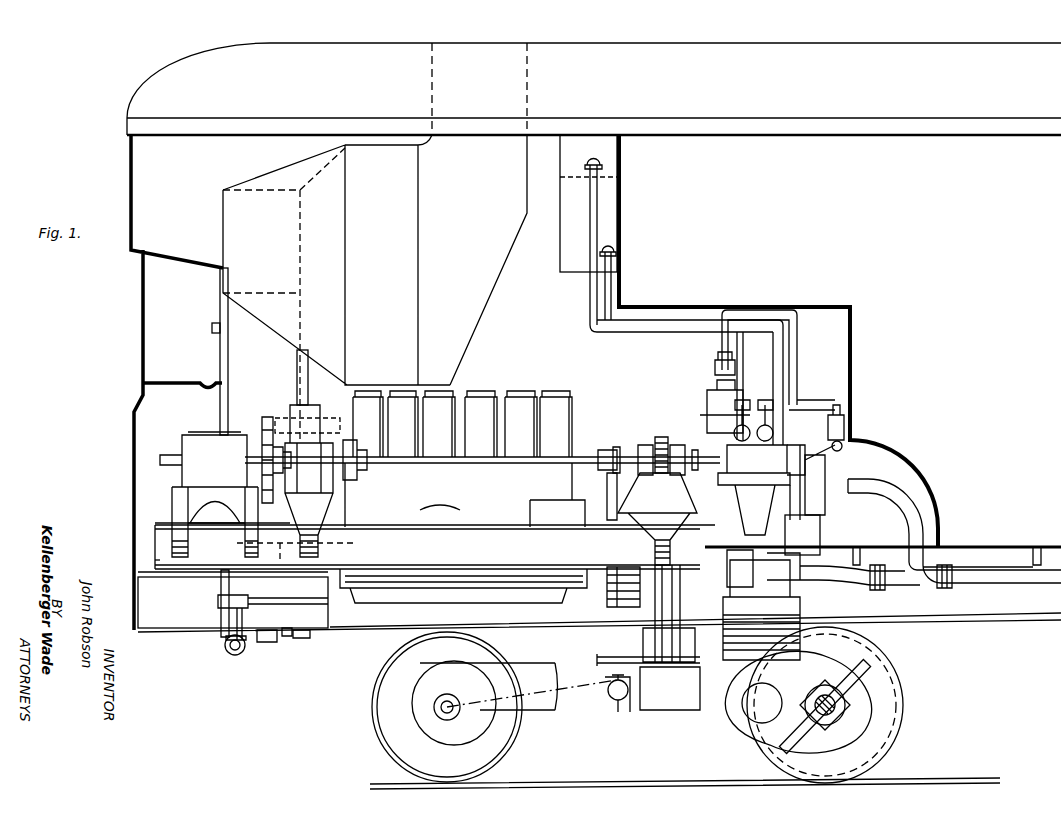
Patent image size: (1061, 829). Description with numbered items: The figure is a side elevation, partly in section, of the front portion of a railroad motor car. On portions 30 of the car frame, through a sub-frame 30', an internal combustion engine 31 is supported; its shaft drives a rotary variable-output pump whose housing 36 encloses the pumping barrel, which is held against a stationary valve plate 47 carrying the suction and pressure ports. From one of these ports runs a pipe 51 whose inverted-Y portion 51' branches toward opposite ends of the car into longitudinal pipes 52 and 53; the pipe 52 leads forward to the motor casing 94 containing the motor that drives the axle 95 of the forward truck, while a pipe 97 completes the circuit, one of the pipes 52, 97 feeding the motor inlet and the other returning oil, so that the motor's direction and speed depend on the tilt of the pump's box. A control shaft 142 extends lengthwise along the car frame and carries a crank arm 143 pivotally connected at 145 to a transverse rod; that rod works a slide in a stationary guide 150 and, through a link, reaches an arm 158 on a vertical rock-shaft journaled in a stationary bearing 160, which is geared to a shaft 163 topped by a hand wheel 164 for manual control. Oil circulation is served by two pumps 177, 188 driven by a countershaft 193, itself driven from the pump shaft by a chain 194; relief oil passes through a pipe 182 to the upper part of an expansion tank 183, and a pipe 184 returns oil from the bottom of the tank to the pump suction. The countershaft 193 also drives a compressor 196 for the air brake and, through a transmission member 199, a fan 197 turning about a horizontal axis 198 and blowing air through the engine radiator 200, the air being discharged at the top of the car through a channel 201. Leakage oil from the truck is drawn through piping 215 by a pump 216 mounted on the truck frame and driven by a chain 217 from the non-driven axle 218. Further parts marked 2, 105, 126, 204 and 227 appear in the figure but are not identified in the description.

The frame rail 2 is at (996, 621).
The car frame portions 30 is at (233, 600).
The sub-frame 30' is at (435, 547).
The internal combustion engine 31 is at (465, 459).
The pump housing 36 is at (800, 485).
The valve plate 47 is at (827, 486).
The pipe 51 is at (894, 512).
The inverted Y portion 51' is at (918, 585).
The longitudinal pipe 52 is at (858, 582).
The longitudinal pipe 53 is at (1028, 583).
The motor casing 94 is at (715, 745).
The forward truck axle 95 is at (835, 712).
The pipe 97 is at (849, 552).
The pipe 105 is at (710, 405).
The cylinder 126 is at (720, 415).
The control shaft 142 is at (282, 597).
The crank arm 143 is at (248, 618).
The pivotal connection 145 is at (244, 655).
The stationary guide 150 is at (250, 650).
The arm 158 is at (262, 652).
The stationary bearing 160 is at (288, 636).
The shaft 163 is at (300, 638).
The hand wheel 164 is at (302, 397).
The pump 177 is at (754, 467).
The pipe 182 is at (598, 296).
The expansion tank 183 is at (600, 148).
The pipe 184 is at (609, 290).
The pump 188 is at (783, 480).
The countershaft 193 is at (585, 455).
The link-belt or chain 194 is at (660, 437).
The compressor 196 is at (209, 494).
The fan 197 is at (232, 352).
The horizontal axis 198 is at (212, 327).
The transmission member 199 is at (305, 372).
The engine radiator 200 is at (375, 287).
The channel 201 is at (594, 89).
The valve 204 is at (838, 430).
The piping 215 is at (669, 712).
The pump 216 is at (612, 701).
The chain 217 is at (575, 711).
The axle 218 is at (447, 707).
The pipe 227 is at (842, 435).